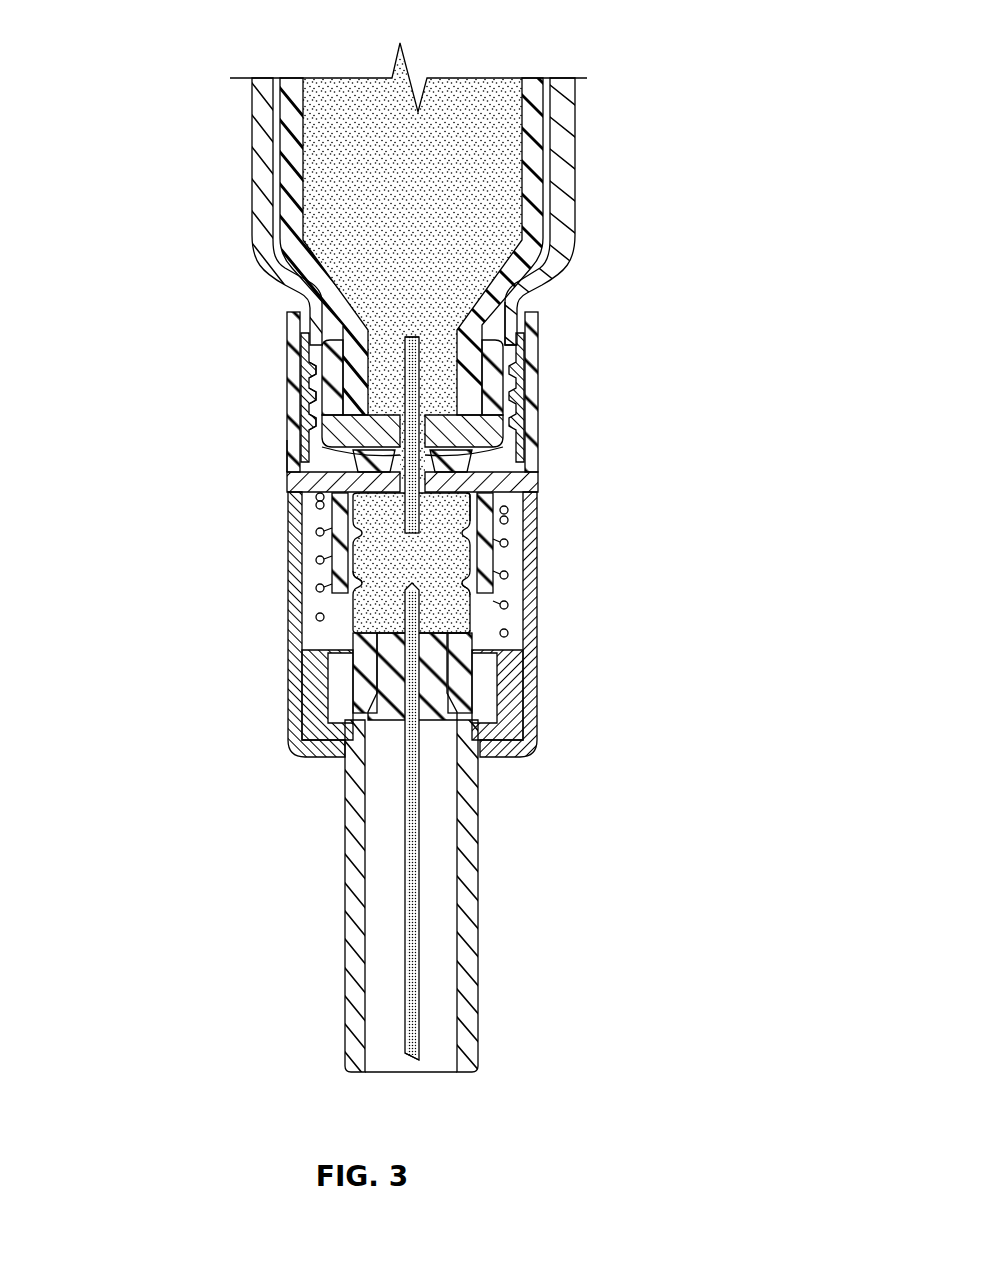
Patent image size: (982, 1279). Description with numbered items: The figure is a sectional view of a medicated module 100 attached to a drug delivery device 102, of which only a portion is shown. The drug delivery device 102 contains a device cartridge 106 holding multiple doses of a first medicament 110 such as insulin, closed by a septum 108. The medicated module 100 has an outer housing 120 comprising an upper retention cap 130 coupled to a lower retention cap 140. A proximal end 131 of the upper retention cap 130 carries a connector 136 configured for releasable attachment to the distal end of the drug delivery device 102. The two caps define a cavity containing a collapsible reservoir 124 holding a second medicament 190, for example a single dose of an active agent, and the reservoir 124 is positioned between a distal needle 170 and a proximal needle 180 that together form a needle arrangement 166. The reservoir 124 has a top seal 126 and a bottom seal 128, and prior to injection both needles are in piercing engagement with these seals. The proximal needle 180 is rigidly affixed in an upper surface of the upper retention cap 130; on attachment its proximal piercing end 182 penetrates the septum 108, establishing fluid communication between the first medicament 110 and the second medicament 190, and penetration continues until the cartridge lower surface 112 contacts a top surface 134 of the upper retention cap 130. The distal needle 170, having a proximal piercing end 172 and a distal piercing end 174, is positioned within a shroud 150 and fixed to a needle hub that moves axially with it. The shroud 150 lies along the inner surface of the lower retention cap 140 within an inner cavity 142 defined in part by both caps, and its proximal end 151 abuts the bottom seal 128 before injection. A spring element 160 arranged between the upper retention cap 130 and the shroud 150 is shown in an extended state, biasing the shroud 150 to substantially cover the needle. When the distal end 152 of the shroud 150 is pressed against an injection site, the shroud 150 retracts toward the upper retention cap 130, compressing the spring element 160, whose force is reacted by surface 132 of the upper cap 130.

The medicated module 100 is at (394, 559).
The drug delivery device 102 is at (577, 103).
The device cartridge 106 is at (533, 90).
The septum 108 is at (467, 434).
The first medicament 110 is at (393, 152).
The cartridge lower surface 112 is at (508, 374).
The outer housing 120 is at (334, 511).
The reservoir 124 is at (452, 522).
The top seal 126 is at (482, 481).
The bottom seal 128 is at (458, 628).
The upper retention cap 130 is at (302, 376).
The proximal end 131 is at (538, 341).
The surface 132 is at (300, 480).
The top surface 134 is at (325, 405).
The connector 136 is at (307, 387).
The lower retention cap 140 is at (290, 572).
The inner cavity 142 is at (455, 604).
The shroud 150 is at (468, 906).
The proximal end 151 is at (463, 658).
The distal end 152 is at (479, 1057).
The spring element 160 is at (320, 618).
The needle arrangement 166 is at (534, 545).
The distal needle 170 is at (406, 848).
The proximal piercing end 172 is at (367, 583).
The distal piercing end 174 is at (417, 1061).
The proximal needle 180 is at (412, 390).
The proximal piercing end 182 is at (407, 337).
The second medicament 190 is at (380, 567).